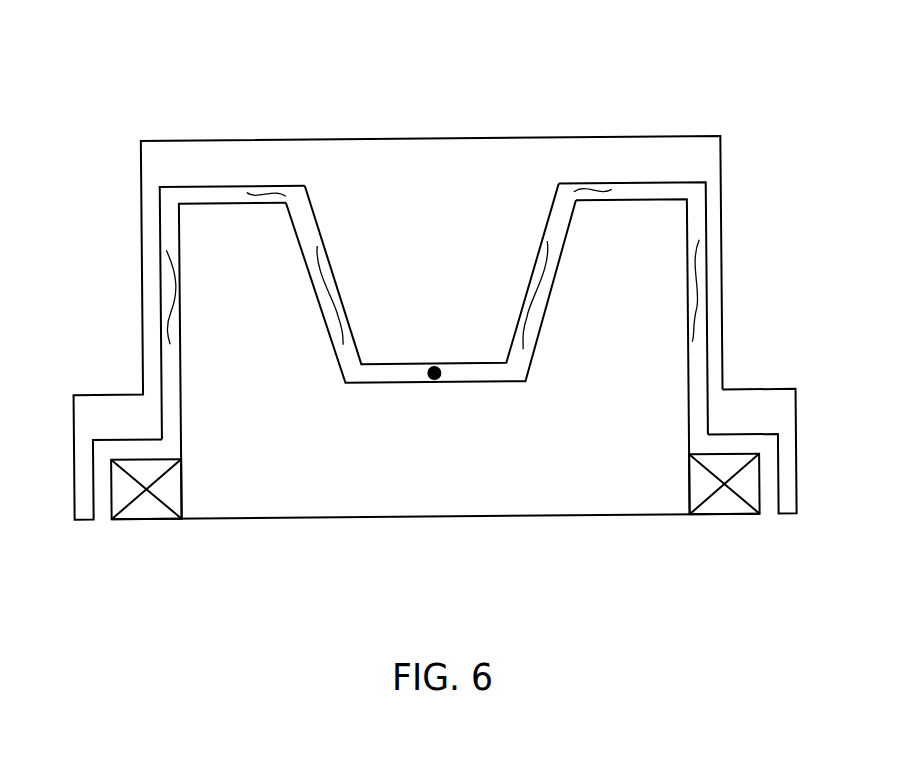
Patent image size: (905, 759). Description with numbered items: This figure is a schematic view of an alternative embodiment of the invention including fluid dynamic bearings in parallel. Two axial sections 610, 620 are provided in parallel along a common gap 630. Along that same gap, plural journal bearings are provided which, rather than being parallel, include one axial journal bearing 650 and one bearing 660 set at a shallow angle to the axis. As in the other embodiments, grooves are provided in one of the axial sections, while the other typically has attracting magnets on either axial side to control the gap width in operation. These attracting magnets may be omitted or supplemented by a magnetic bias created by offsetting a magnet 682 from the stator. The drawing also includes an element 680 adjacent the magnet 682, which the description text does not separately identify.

The axial section 610 is at (219, 186).
The axial section 620 is at (410, 366).
The common gap 630 is at (706, 353).
The axial journal bearing 650 is at (162, 355).
The bearing at a shallow angle to the axis 660 is at (332, 259).
The right step member 680 is at (796, 472).
The magnet 682 is at (728, 519).